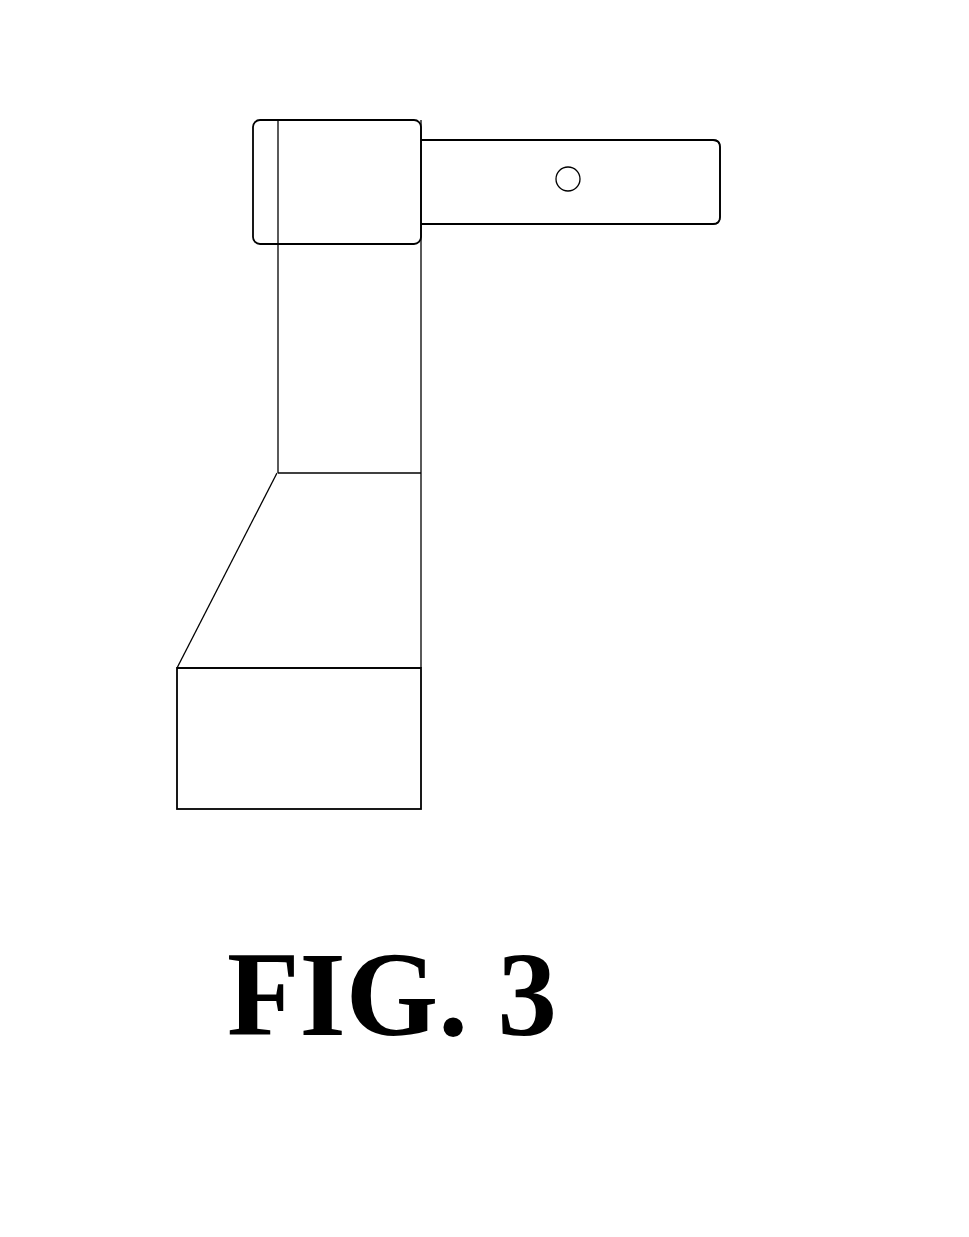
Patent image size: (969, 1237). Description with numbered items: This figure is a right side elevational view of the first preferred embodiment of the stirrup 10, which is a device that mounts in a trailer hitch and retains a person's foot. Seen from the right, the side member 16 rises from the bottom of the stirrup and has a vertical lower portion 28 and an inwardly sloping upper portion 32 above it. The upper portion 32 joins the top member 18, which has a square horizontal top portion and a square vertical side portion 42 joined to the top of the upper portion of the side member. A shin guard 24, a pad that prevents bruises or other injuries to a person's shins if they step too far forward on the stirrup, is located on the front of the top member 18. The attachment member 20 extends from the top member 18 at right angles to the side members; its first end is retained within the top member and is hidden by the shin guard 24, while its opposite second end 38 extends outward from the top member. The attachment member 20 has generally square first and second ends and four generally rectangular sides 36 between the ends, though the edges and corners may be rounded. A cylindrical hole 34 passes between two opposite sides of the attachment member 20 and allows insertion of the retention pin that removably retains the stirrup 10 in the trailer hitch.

The stirrup 10 is at (437, 431).
The side member 16 is at (277, 472).
The top member 18 is at (339, 119).
The attachment member 20 is at (601, 140).
The shin guard 24 is at (253, 175).
The vertical lower portion 28 is at (211, 600).
The inwardly sloping upper portion 32 is at (277, 330).
The cylindrical hole 34 is at (557, 179).
The rectangular side 36 is at (573, 225).
The second end 38 is at (720, 180).
The vertical side portion 42 is at (421, 120).